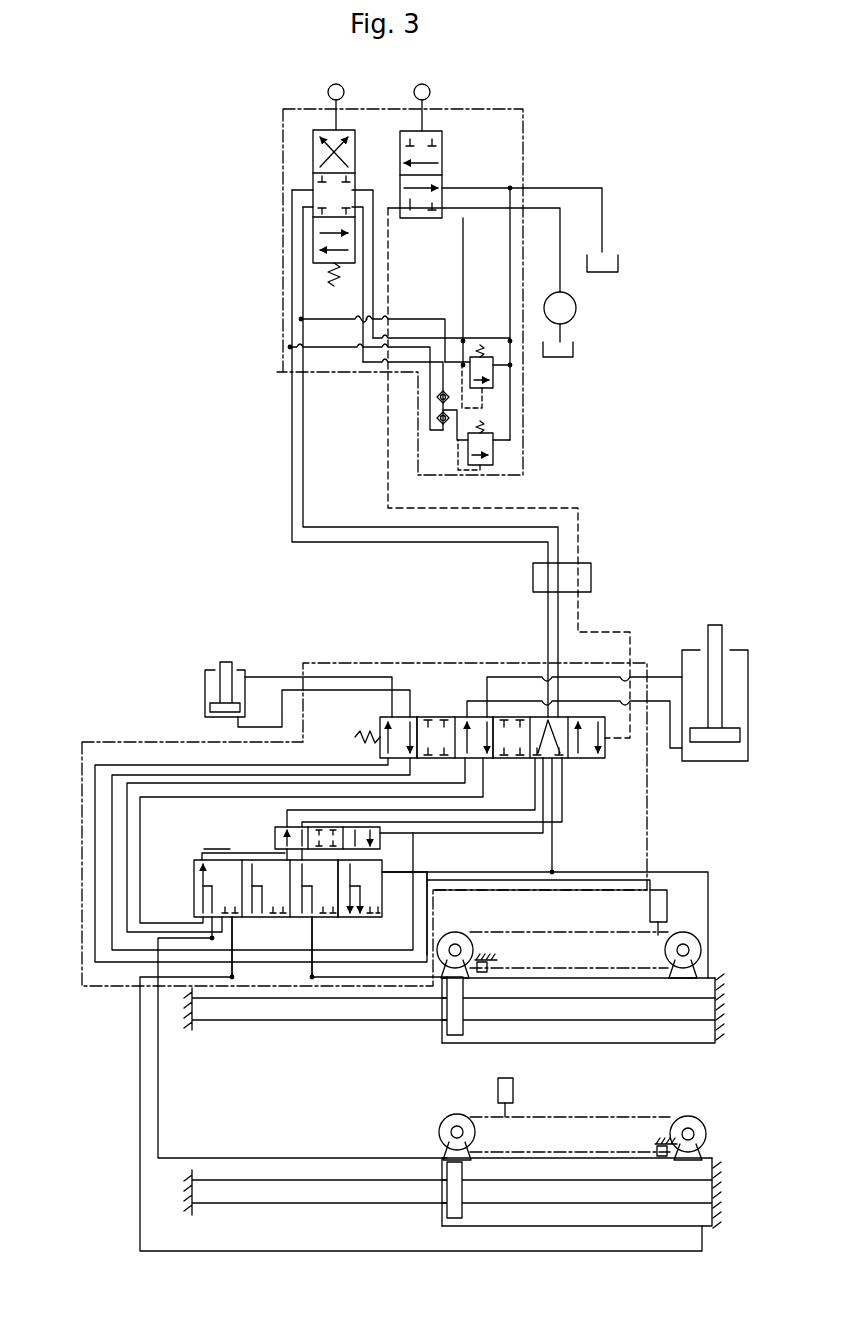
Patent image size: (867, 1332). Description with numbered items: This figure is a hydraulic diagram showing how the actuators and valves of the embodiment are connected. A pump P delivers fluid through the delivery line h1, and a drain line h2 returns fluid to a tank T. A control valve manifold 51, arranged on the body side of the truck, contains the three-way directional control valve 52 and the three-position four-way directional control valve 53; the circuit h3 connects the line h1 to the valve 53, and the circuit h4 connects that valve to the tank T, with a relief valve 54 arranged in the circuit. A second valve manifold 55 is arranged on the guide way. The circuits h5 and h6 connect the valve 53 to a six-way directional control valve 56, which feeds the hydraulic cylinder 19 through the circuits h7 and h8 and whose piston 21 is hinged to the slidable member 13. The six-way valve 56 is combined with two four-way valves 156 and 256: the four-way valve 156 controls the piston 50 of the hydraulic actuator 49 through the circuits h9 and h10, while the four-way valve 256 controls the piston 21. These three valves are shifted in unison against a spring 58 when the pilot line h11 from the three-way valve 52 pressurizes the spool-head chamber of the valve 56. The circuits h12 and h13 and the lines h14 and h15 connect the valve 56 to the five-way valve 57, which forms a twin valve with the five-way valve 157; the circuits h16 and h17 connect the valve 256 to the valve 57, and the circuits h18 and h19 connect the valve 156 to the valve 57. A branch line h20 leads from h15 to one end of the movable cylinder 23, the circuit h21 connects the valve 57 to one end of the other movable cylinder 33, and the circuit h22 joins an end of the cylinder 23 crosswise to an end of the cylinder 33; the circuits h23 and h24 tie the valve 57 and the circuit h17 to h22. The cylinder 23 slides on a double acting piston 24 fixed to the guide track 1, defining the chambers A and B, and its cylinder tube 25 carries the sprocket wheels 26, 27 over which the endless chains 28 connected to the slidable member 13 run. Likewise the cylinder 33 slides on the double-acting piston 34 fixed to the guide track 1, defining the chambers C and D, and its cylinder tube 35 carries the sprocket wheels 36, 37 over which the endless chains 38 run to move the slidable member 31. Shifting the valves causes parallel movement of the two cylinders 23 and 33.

The control valve manifold 51 is at (462, 110).
The three-way directional control valve 52 is at (442, 152).
The three-position four-way directional control valve 53 is at (312, 160).
The relief valve 54 is at (500, 458).
The valve manifold 55 is at (80, 964).
The six-way directional control valve 56 is at (506, 719).
The five-way directional valve 57 is at (285, 874).
The spring 58 is at (352, 738).
The four-way valve 156 is at (444, 716).
The four-way directional control valve 256 is at (516, 716).
The five-way valve 157 is at (346, 918).
The hydraulic actuator 49 is at (204, 690).
The piston 50 is at (226, 660).
The hydraulic cylinder 19 is at (749, 700).
The piston 21 is at (714, 624).
The slidable member 13 is at (668, 900).
The guide track 1 is at (490, 962).
The movable cylinder 23 is at (716, 982).
The double acting piston 24 is at (420, 1024).
The cylinder tube 25 is at (698, 1046).
The sprocket wheel 26 is at (454, 932).
The sprocket wheel 27 is at (702, 950).
The endless chain 28 is at (566, 940).
The slidable member 31 is at (512, 1090).
The movable cylinder 33 is at (716, 1160).
The double-acting piston 34 is at (384, 1204).
The cylinder tube 35 is at (706, 1230).
The sprocket wheel 36 is at (438, 1134).
The sprocket wheel 37 is at (706, 1122).
The endless chain 38 is at (526, 1120).
The chamber A is at (618, 1046).
The chamber B is at (448, 1040).
The chamber C is at (598, 1220).
The chamber D is at (450, 1222).
The hydraulic pump P is at (572, 322).
The tank T is at (606, 272).
The delivery line h1 is at (560, 246).
The drain line h2 is at (604, 214).
The hydraulic circuit h3 is at (464, 222).
The hydraulic circuit h4 is at (510, 320).
The hydraulic circuit h5 is at (290, 508).
The hydraulic circuit h6 is at (304, 470).
The hydraulic circuit h7 is at (666, 676).
The hydraulic circuit h8 is at (670, 750).
The hydraulic circuit h9 is at (286, 674).
The hydraulic circuit h10 is at (228, 728).
The hydraulic pilot line h11 is at (548, 508).
The hydraulic circuit h12 is at (534, 776).
The hydraulic circuit h13 is at (562, 796).
The line h14 is at (518, 836).
The line h15 is at (554, 852).
The hydraulic circuit h16 is at (94, 812).
The hydraulic circuit h17 is at (110, 846).
The hydraulic circuit h18 is at (126, 878).
The hydraulic circuit h19 is at (139, 910).
The branch line h20 is at (668, 888).
The hydraulic circuit h21 is at (158, 1088).
The hydraulic circuit h22 is at (138, 1112).
The hydraulic circuit h23 is at (236, 978).
The hydraulic circuit h24 is at (314, 978).